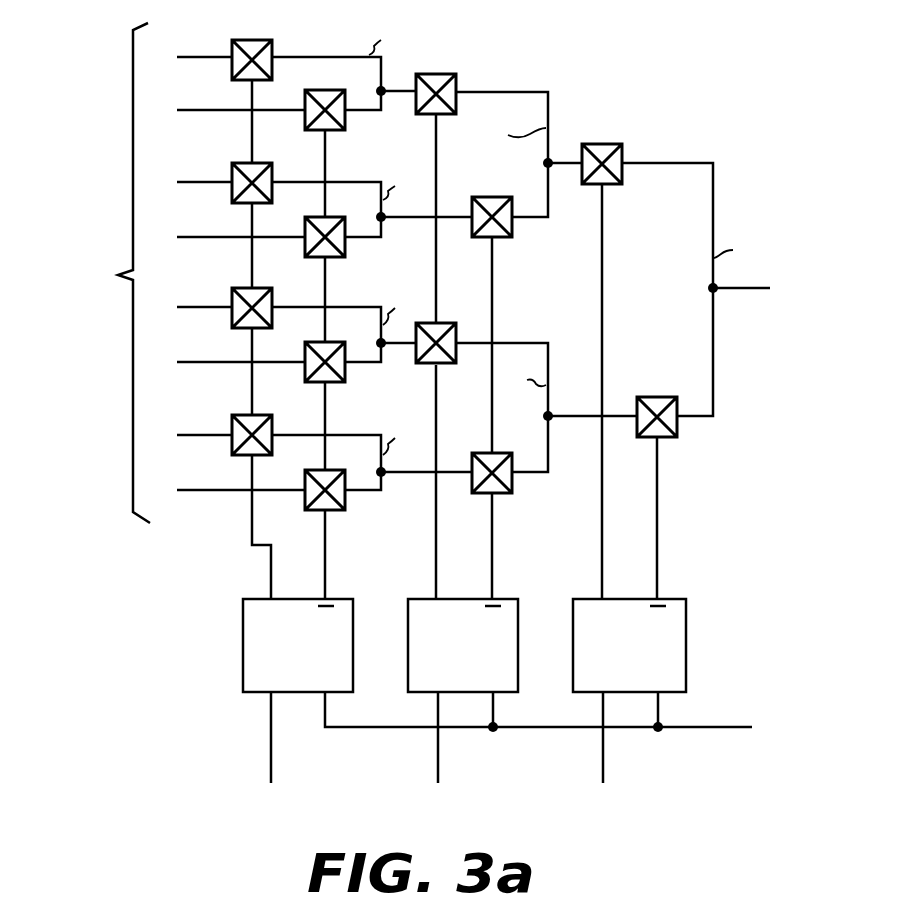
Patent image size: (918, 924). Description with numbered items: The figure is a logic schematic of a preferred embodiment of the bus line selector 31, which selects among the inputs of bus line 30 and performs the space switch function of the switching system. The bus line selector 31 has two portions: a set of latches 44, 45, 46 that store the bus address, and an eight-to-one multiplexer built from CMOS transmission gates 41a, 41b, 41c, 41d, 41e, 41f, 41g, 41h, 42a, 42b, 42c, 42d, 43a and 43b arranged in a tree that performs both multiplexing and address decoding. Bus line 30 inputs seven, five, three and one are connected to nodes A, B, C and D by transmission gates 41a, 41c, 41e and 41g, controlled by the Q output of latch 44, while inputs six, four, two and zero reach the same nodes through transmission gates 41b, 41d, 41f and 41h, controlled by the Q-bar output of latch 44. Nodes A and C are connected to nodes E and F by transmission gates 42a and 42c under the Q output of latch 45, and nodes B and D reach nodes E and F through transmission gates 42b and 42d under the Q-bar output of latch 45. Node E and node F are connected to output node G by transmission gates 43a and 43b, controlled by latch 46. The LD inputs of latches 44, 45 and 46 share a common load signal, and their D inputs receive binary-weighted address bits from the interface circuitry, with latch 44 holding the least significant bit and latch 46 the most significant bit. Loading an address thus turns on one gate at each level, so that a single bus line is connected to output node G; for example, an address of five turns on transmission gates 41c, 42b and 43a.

The bus line 30 is at (164, 273).
The bus line selector 31 is at (192, 583).
The transmission gate 41a is at (262, 40).
The transmission gate 41b is at (345, 124).
The transmission gate 41c is at (250, 163).
The transmission gate 41d is at (345, 252).
The transmission gate 41e is at (250, 288).
The transmission gate 41f is at (345, 376).
The transmission gate 41g is at (250, 415).
The transmission gate 41h is at (345, 505).
The transmission gate 42a is at (440, 74).
The transmission gate 42b is at (512, 232).
The transmission gate 42c is at (457, 332).
The transmission gate 42d is at (512, 488).
The transmission gate 43a is at (610, 144).
The transmission gate 43b is at (677, 430).
The latch 44 is at (354, 606).
The latch 45 is at (519, 606).
The latch 46 is at (687, 606).